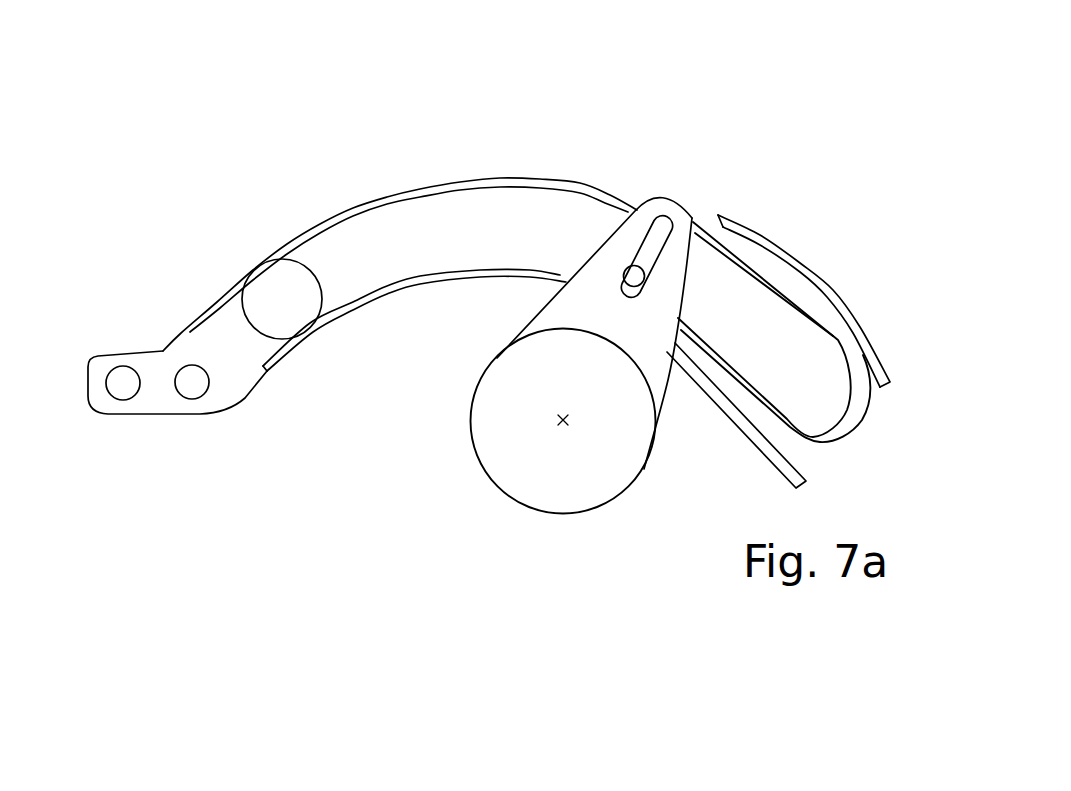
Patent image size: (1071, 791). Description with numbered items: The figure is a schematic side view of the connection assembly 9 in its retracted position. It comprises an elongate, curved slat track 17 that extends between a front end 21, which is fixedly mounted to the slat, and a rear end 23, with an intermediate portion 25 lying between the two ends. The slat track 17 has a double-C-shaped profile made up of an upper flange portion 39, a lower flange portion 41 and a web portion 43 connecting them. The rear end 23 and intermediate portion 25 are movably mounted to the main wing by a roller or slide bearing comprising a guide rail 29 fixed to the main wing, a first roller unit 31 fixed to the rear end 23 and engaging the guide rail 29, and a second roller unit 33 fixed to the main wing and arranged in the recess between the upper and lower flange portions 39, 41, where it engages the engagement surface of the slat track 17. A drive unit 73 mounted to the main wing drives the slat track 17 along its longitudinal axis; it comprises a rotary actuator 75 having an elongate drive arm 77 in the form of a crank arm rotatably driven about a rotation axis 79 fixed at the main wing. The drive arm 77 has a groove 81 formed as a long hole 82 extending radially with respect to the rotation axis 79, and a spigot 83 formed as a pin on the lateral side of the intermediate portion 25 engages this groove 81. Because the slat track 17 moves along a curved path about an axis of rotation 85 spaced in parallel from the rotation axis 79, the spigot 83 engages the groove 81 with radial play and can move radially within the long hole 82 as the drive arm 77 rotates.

The connection assembly 9 is at (140, 153).
The slat track 17 is at (409, 238).
The front end 21 is at (237, 372).
The rear end 23 is at (820, 412).
The intermediate portion 25 is at (583, 217).
The guide rail 29 is at (848, 313).
The first roller unit 31 is at (858, 412).
The second roller unit 33 is at (262, 290).
The upper flange portion 39 is at (327, 217).
The lower flange portion 41 is at (330, 323).
The web portion 43 is at (456, 245).
The drive unit 73 is at (420, 483).
The rotary actuator 75 is at (607, 473).
The drive arm 77 is at (592, 283).
The rotation axis 79 is at (563, 425).
The groove 81 is at (682, 210).
The long hole 82 is at (662, 232).
The spigot 83 is at (638, 275).
The axis of rotation 85 is at (512, 573).